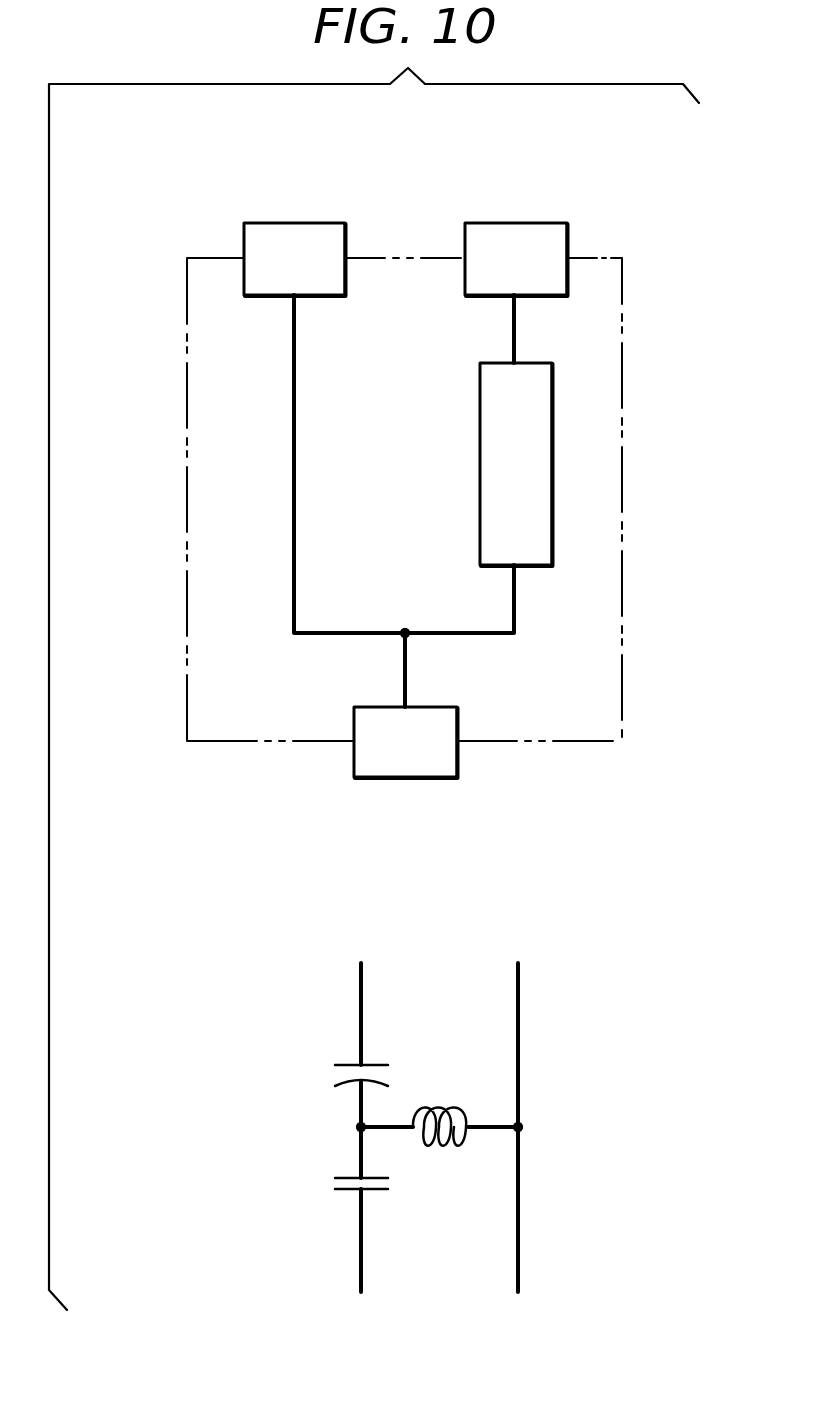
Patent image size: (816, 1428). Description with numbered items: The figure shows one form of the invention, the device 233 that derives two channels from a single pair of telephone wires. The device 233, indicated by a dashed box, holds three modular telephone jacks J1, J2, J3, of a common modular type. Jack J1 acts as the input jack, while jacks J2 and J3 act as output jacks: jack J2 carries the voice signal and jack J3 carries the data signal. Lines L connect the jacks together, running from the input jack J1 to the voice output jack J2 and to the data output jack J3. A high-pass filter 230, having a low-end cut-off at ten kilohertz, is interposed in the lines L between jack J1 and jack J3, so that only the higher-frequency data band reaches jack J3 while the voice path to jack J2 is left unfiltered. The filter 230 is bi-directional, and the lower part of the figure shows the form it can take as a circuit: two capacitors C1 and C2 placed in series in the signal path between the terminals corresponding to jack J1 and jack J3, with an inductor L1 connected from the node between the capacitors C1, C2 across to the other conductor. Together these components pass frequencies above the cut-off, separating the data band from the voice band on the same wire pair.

The device 233 is at (187, 416).
The high-pass filter 230 is at (480, 473).
The jack J2 is at (293, 223).
The jack J3 is at (505, 223).
The jack J1 is at (403, 779).
The lines L is at (512, 344).
The capacitor C1 is at (345, 1188).
The capacitor C2 is at (345, 1076).
The inductor L1 is at (439, 1149).